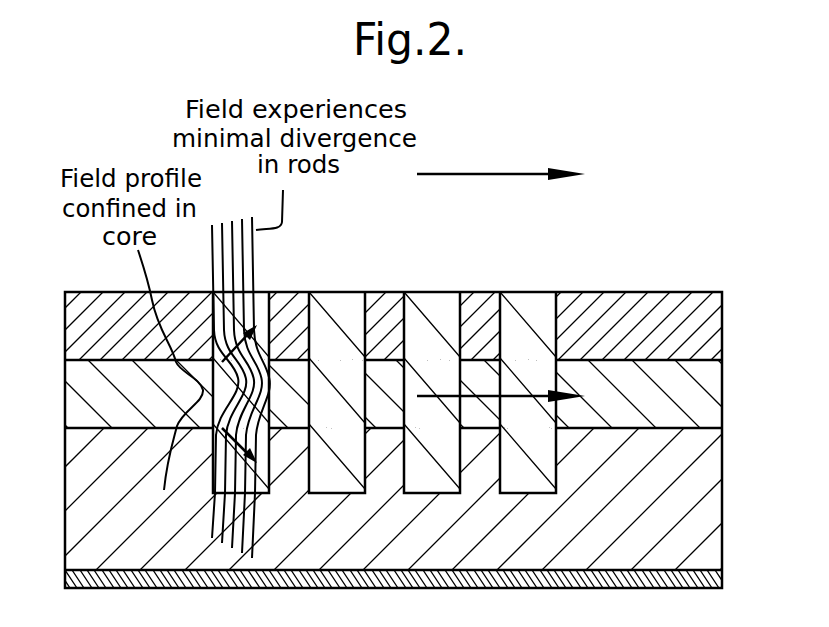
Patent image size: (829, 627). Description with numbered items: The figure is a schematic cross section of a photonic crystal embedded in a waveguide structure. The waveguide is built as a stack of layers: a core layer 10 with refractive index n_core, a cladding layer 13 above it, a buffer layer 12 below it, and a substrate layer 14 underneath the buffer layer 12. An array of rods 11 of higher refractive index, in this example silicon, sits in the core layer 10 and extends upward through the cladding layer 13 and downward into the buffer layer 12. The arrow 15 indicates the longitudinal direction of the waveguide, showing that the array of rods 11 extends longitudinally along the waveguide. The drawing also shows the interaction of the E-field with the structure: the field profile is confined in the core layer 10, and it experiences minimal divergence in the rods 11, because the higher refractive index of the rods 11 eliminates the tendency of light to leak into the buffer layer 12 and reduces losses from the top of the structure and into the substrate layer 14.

The core layer 10 is at (692, 397).
The rods 11 is at (512, 302).
The buffer layer 12 is at (700, 511).
The cladding layer 13 is at (693, 328).
The substrate layer 14 is at (705, 584).
The arrow 15 is at (530, 176).